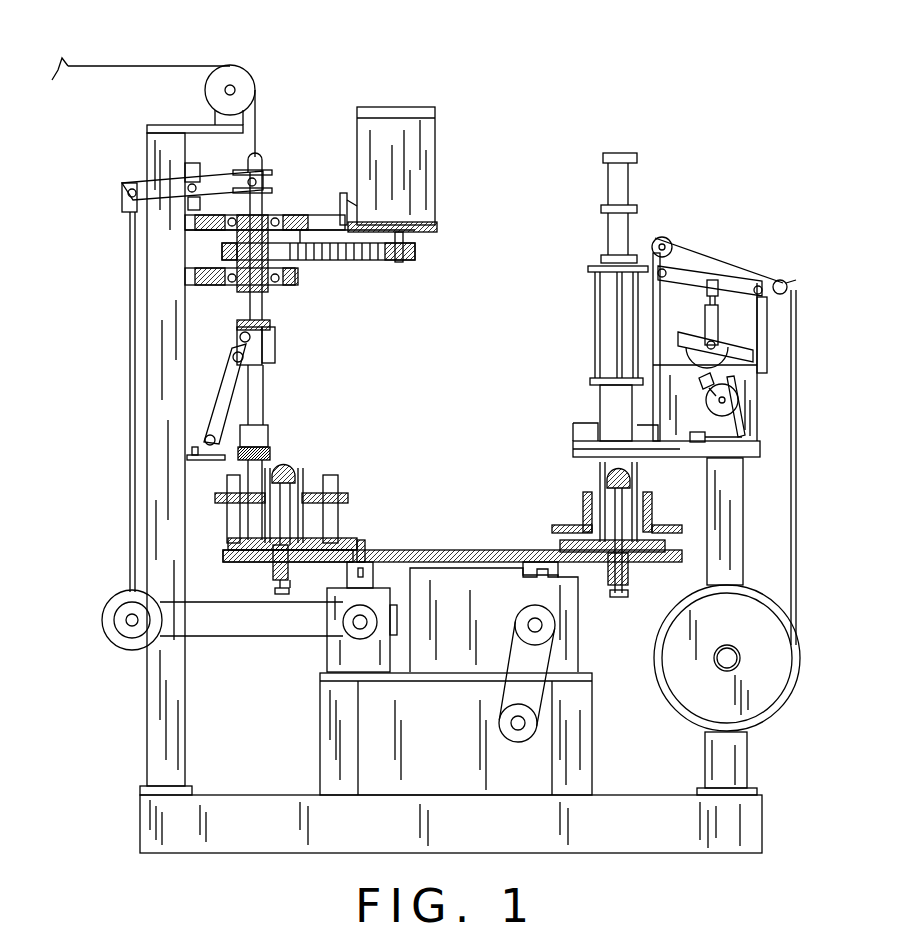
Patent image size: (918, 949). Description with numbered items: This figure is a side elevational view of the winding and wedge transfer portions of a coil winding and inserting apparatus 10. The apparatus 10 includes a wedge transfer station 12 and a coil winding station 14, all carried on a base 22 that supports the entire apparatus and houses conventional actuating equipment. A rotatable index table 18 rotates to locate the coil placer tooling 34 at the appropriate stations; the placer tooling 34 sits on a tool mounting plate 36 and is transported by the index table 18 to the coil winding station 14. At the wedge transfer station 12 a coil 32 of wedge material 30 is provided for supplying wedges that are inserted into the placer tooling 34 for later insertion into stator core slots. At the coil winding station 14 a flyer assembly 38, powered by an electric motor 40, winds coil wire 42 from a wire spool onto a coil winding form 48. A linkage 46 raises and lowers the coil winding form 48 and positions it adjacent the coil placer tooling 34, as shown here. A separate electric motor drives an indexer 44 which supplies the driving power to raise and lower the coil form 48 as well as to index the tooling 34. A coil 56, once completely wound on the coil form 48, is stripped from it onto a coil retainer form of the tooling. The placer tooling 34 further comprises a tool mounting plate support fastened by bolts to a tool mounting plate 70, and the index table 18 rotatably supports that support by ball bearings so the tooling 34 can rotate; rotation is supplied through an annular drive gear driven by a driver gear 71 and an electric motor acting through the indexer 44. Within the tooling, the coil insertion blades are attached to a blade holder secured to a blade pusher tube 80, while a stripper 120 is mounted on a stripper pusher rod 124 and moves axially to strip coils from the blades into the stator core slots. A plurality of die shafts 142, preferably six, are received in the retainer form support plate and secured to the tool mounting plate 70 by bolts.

The coil winding and inserting apparatus 10 is at (702, 124).
The wedge transfer station 12 is at (760, 244).
The coil winding station 14 is at (93, 258).
The rotatable index table 18 is at (460, 550).
The base 22 is at (745, 827).
The wedge material 30 is at (795, 500).
The coil of wedge material 32 is at (795, 683).
The coil placer tooling 34 is at (359, 483).
The tool mounting plate 36 is at (667, 548).
The flyer assembly 38 is at (210, 413).
The electric motor 40 is at (420, 170).
The coil wire 42 is at (145, 66).
The indexer 44 is at (338, 653).
The linkage 46 is at (131, 338).
The coil winding form 48 is at (268, 437).
The coil 56 is at (268, 455).
The tool mounting plate 70 is at (340, 548).
The driver gear 71 is at (375, 544).
The blade pusher tube 80 is at (290, 560).
The stripper 120 is at (283, 473).
The stripper pusher rod 124 is at (275, 590).
The die shafts 142 is at (228, 542).